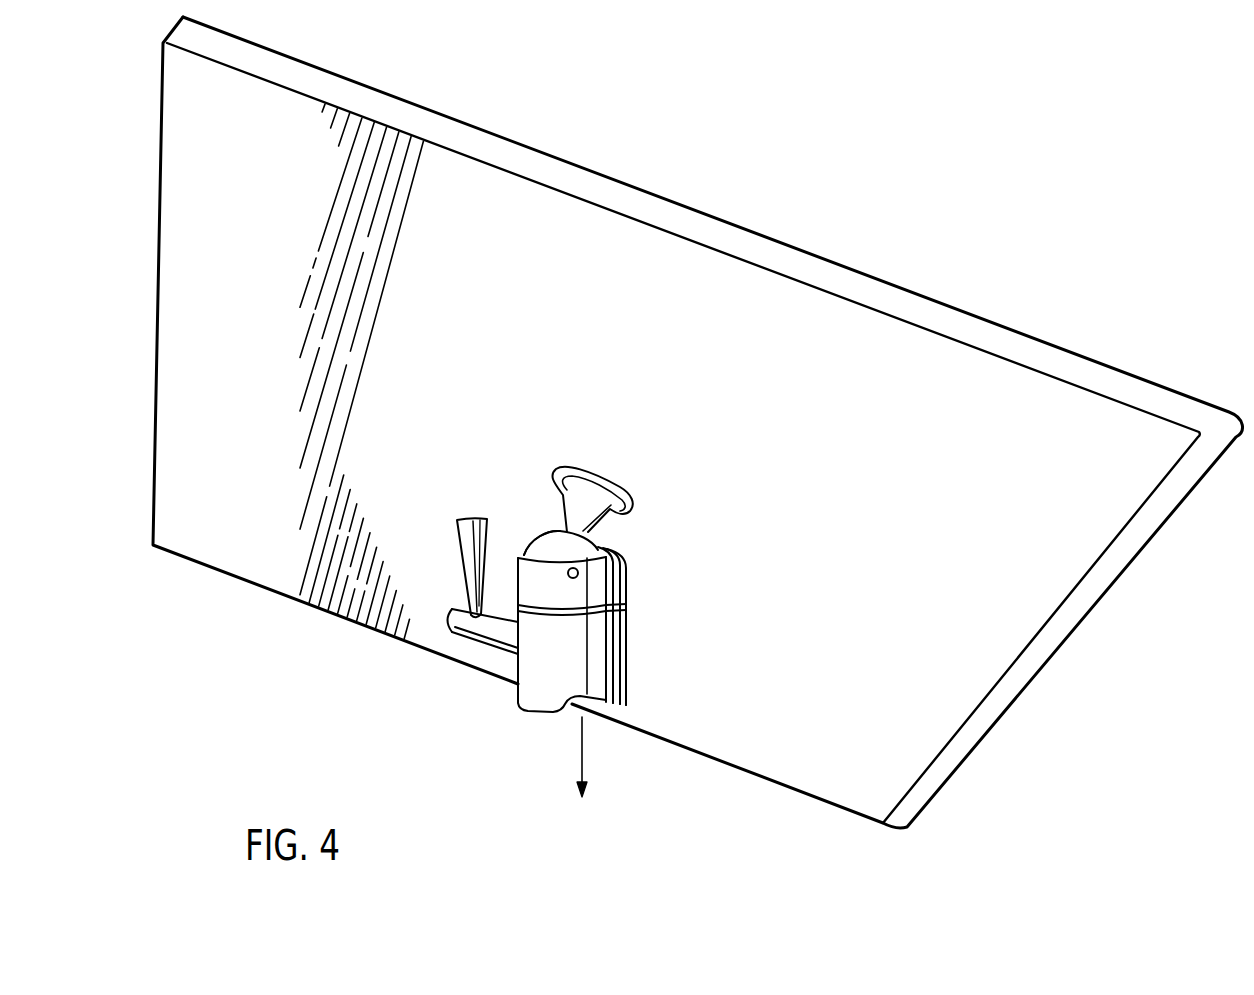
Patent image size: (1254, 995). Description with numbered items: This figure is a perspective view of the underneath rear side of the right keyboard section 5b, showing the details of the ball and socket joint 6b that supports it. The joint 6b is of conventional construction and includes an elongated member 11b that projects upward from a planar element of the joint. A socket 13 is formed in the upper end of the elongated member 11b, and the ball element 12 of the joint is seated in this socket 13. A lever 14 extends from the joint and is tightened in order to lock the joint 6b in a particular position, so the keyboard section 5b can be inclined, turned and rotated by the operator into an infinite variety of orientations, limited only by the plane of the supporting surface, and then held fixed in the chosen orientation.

The right keyboard section 5b is at (965, 312).
The ball and socket joint 6b is at (625, 575).
The elongated member 11b is at (628, 650).
The lever handle 12 is at (603, 538).
The socket 13 is at (523, 550).
The lever 14 is at (460, 543).